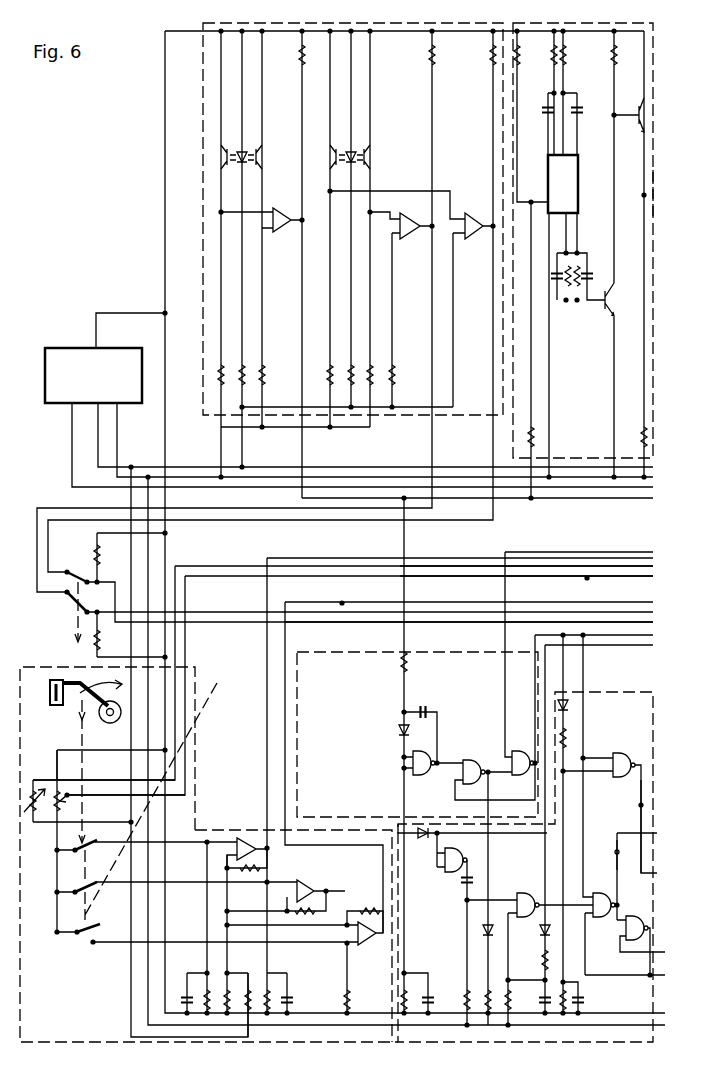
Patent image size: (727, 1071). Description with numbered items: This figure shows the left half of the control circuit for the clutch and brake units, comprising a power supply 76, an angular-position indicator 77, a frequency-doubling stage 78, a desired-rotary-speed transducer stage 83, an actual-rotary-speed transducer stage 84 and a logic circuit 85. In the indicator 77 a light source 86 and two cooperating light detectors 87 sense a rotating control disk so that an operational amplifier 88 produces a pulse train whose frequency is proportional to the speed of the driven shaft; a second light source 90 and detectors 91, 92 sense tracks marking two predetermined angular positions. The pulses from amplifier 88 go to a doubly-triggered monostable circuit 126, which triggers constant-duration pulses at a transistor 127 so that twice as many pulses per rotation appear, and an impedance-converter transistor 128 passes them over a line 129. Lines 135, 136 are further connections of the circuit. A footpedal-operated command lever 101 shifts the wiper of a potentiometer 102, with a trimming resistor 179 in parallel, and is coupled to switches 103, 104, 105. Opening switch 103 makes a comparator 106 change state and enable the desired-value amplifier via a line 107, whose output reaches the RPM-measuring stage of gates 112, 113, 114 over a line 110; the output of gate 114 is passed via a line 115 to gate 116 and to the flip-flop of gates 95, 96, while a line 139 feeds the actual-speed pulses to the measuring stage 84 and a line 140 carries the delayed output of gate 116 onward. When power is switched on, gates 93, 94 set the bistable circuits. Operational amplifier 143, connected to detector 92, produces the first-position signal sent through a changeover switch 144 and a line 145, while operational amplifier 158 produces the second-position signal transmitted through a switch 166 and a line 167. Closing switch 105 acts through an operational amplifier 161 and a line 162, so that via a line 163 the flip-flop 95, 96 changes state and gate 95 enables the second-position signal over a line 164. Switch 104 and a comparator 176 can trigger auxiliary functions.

The power supply 76 is at (70, 360).
The angular-position indicator 77 is at (203, 263).
The frequency-doubling stage 78 is at (575, 462).
The desired-rotary-speed transducer stage 83 is at (196, 813).
The actual-rotary-speed transducer stage 84 is at (296, 690).
The logic circuit 85 is at (654, 688).
The light source 86 is at (242, 151).
The light detectors 87 is at (219, 158).
The operational amplifier 88 is at (284, 232).
The second light source 90 is at (357, 155).
The light detector 91 is at (328, 158).
The light detector 92 is at (372, 159).
The gate 93 is at (450, 872).
The gate 94 is at (518, 893).
The gate 95 is at (604, 893).
The gate 96 is at (642, 916).
The desired-rotary-speed command lever 101 is at (50, 678).
The potentiometer 102 is at (68, 800).
The switch 103 is at (62, 848).
The switch 104 is at (62, 888).
The switch 105 is at (86, 938).
The operational-amplifier comparator 106 is at (244, 838).
The line 107 is at (470, 559).
The line 110 is at (614, 556).
The gate 112 is at (422, 777).
The gate 113 is at (470, 760).
The gate 114 is at (512, 777).
The line 115 is at (607, 646).
The gate 116 is at (632, 745).
The doubly-triggered monostable circuit 126 is at (577, 192).
The transistor 127 is at (604, 306).
The impedance-converter transistor 128 is at (649, 121).
The line 129 is at (662, 195).
The signal line 135 is at (563, 566).
The signal line 136 is at (587, 578).
The line 139 is at (405, 598).
The line 140 is at (639, 805).
The operational amplifier 143 is at (410, 239).
The changeover switch 144 is at (62, 602).
The line 145 is at (226, 579).
The operational amplifier 158 is at (473, 239).
The operational amplifier 161 is at (366, 940).
The line 162 is at (341, 591).
The line 163 is at (623, 956).
The line 164 is at (616, 850).
The switch 166 is at (72, 574).
The line 167 is at (328, 646).
The operational-amplifier comparator 176 is at (310, 881).
The trimming resistor 179 is at (30, 790).